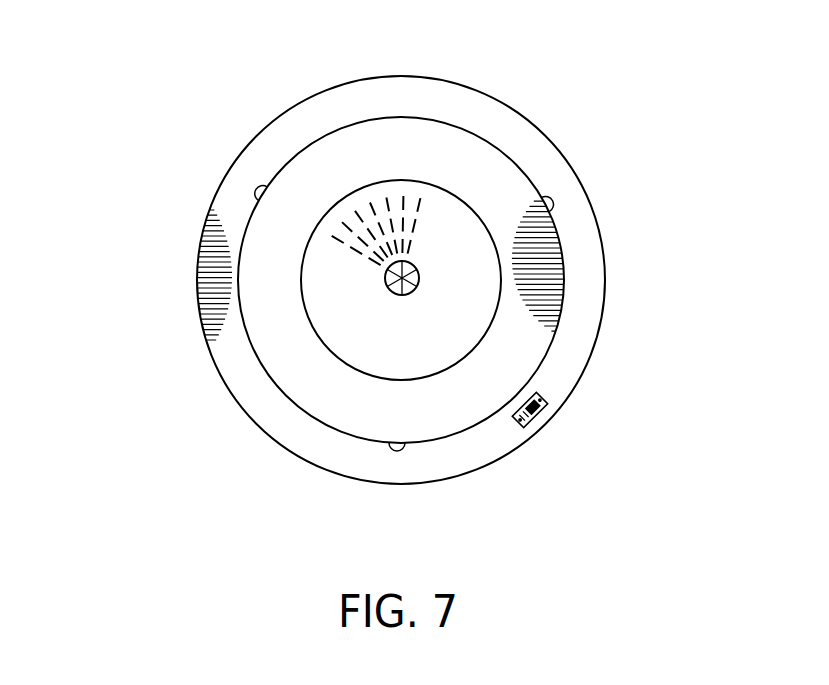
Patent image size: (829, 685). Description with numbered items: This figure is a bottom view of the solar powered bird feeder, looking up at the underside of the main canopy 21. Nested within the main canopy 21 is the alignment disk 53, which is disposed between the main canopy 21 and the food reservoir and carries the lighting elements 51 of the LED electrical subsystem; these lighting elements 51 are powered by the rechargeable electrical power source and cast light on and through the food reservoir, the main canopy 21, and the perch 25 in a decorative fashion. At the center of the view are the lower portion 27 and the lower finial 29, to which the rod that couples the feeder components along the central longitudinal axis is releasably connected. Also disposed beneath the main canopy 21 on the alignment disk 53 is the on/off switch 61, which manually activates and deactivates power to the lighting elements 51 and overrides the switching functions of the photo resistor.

The main canopy 21 is at (520, 108).
The alignment disk 53 is at (340, 107).
The perch 25 is at (265, 293).
The lower portion 27 is at (357, 320).
The lower finial 29 is at (421, 271).
The lighting element 51 is at (248, 187).
The on/off switch 61 is at (543, 423).